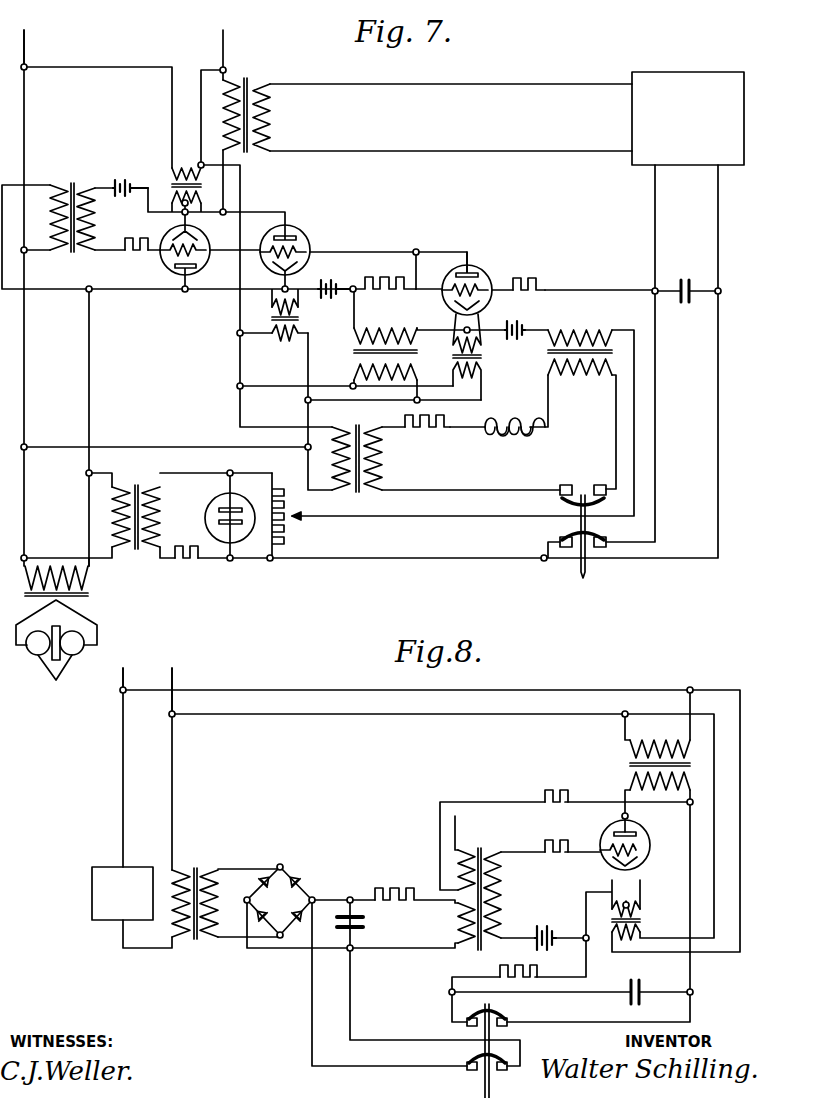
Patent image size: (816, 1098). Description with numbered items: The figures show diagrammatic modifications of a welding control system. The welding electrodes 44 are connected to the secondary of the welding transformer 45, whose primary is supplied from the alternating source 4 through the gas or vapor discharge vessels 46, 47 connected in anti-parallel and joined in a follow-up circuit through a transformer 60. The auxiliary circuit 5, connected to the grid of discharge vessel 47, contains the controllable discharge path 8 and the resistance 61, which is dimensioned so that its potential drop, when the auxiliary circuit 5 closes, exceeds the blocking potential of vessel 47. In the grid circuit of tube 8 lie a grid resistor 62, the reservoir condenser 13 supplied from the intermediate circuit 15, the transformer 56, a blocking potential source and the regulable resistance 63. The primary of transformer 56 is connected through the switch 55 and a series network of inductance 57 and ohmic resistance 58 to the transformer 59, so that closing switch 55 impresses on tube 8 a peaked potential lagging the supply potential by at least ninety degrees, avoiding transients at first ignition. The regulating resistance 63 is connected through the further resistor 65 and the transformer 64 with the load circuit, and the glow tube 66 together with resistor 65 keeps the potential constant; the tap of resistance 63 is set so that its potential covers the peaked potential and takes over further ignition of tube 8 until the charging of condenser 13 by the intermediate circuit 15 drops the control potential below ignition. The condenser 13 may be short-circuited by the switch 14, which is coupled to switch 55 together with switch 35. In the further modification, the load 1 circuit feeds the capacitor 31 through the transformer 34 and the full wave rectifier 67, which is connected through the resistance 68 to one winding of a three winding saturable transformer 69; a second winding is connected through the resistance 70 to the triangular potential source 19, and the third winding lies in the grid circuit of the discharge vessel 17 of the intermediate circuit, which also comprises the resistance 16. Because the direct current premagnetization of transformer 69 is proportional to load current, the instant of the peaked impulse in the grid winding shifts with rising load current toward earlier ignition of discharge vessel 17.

In FIG. 7, the alternating source 4 is at (26, 47).
In FIG. 8, the alternating source 4 is at (172, 680).
In FIG. 7, the transformer 34 is at (246, 78).
In FIG. 8, the transformer 34 is at (200, 868).
In FIG. 7, the intermediate circuit 15 is at (690, 78).
In FIG. 7, the transformer 60 is at (70, 182).
In FIG. 7, the gas or vapor discharge vessel 46 is at (206, 245).
In FIG. 7, the gas or vapor discharge vessel 47 is at (312, 248).
In FIG. 7, the resistance 61 is at (375, 278).
In FIG. 7, the auxiliary circuit 5 is at (430, 311).
In FIG. 7, the gas-filled controllable discharge path 8 is at (485, 280).
In FIG. 7, the grid resistor 62 is at (535, 280).
In FIG. 7, the reservoir condenser 13 is at (684, 280).
In FIG. 8, the reservoir condenser 13 is at (645, 996).
In FIG. 7, the transformer 56 is at (548, 356).
In FIG. 7, the inductance 57 is at (512, 418).
In FIG. 7, the ohmic resistance 58 is at (431, 432).
In FIG. 7, the transformer 59 is at (362, 428).
In FIG. 7, the switch 55 is at (584, 496).
In FIG. 7, the switch 14 is at (604, 539).
In FIG. 8, the switch 14 is at (503, 1014).
In FIG. 7, the transformer 64 is at (138, 485).
In FIG. 7, the glow tube 66 is at (222, 508).
In FIG. 7, the regulable resistance 63 is at (285, 530).
In FIG. 7, the resistor 65 is at (190, 560).
In FIG. 7, the welding transformer 45 is at (88, 594).
In FIG. 7, the welding electrodes 44 is at (56, 651).
In FIG. 8, the load 1 is at (137, 866).
In FIG. 8, the full wave rectifier 67 is at (284, 867).
In FIG. 8, the capacitor 31 is at (368, 926).
In FIG. 8, the resistance 68 is at (395, 887).
In FIG. 8, the three winding saturable transformer 69 is at (480, 850).
In FIG. 8, the resistance 70 is at (552, 790).
In FIG. 8, the transformer 19 is at (630, 766).
In FIG. 8, the gas or vapor filled controllable discharge vessel 17 is at (648, 848).
In FIG. 8, the resistance 16 is at (525, 976).
In FIG. 8, the switch 35 is at (470, 1061).